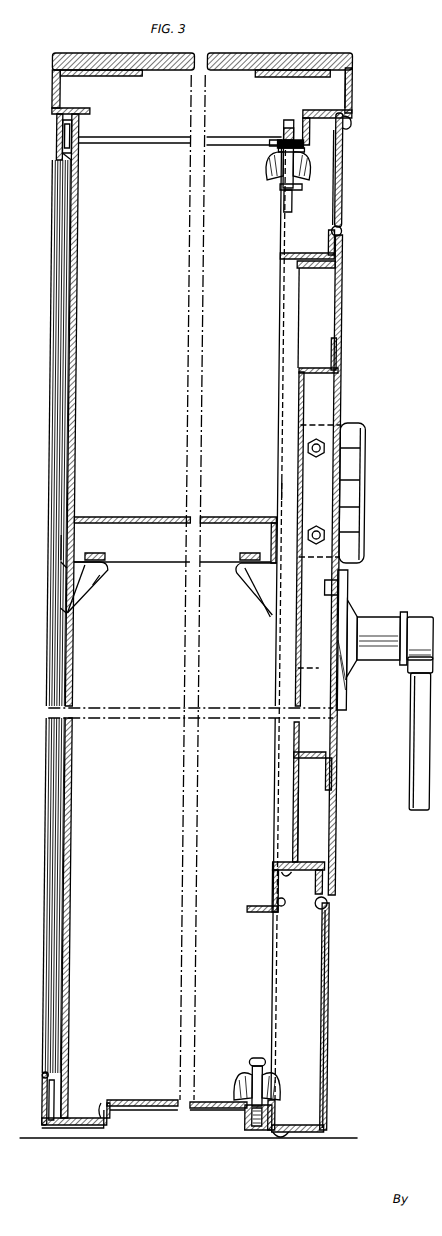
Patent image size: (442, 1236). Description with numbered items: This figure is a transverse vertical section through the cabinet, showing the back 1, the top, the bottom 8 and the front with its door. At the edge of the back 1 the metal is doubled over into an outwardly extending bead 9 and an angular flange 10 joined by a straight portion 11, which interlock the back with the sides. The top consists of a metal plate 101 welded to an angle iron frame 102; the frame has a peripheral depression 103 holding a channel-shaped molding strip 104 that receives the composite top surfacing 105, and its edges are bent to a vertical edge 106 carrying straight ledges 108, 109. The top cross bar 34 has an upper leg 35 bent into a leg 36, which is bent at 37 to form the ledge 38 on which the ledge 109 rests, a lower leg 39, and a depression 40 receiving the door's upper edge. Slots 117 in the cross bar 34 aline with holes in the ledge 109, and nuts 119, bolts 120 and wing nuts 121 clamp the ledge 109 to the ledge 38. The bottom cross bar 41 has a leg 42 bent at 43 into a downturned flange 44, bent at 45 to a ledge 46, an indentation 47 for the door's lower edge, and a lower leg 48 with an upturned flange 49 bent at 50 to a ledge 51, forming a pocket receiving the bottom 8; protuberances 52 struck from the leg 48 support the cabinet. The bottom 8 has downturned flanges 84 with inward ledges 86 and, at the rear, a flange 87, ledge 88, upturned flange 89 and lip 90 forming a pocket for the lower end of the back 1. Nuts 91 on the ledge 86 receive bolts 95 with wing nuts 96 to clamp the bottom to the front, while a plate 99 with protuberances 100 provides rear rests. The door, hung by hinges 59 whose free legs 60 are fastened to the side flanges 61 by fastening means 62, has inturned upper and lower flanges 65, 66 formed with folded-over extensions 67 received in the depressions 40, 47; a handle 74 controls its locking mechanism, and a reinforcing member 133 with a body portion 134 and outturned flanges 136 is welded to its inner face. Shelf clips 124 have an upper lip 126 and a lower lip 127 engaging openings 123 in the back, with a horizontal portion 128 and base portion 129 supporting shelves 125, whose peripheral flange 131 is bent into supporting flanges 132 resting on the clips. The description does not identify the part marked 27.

The back 1 is at (72, 786).
The bottom 8 is at (300, 56).
The bead 9 is at (57, 118).
The flange 10 is at (66, 150).
The straight portion 11 is at (63, 135).
The door inner panel 27 is at (333, 937).
The top cross bar 34 is at (344, 166).
The upper inwardly extending leg 35 is at (348, 122).
The leg 36 is at (310, 143).
The bend 37 is at (290, 135).
The inwardly extending ledge 38 is at (279, 150).
The lower inwardly extending leg 39 is at (284, 254).
The depression 40 is at (343, 215).
The bottom cross bar 41 is at (336, 954).
The inwardly extending leg 42 is at (281, 866).
The bend 43 is at (287, 862).
The downturned flange 44 is at (280, 882).
The bend 45 is at (284, 898).
The inwardly extending ledge 46 is at (255, 910).
The indentation 47 is at (336, 905).
The lower inwardly extending leg 48 is at (304, 1133).
The upturned flange 49 is at (282, 1100).
The bend 50 is at (274, 1095).
The inwardly extending ledge 51 is at (250, 1102).
The protuberances 52 is at (282, 1134).
The hinges 59 is at (368, 424).
The free legs 60 is at (330, 420).
The side door flanges 61 is at (300, 312).
The fastening means 62 is at (313, 528).
The upper flange 65 is at (300, 266).
The lower flange 66 is at (300, 845).
The folded-over extensions 67 is at (345, 232).
The handle 74 is at (417, 749).
The downwardly extending flanges 84 is at (286, 1122).
The inwardly extending legs 86 is at (262, 1132).
The downturned flange 87 is at (112, 1102).
The horizontal leg 88 is at (74, 1118).
The upturned flange 89 is at (53, 1075).
The lip 90 is at (72, 1078).
The nuts 91 is at (256, 1120).
The bolts 95 is at (260, 1062).
The wing nuts 96 is at (250, 1082).
The separate plate 99 is at (160, 1110).
The protuberances 100 is at (95, 1130).
The metal plate 101 is at (250, 68).
The angle iron frame 102 is at (100, 77).
The peripheral depression 103 is at (50, 70).
The molding strip 104 is at (355, 60).
The composite top surfacing 105 is at (104, 56).
The vertical edge 106 is at (352, 95).
The ledge 108 is at (340, 110).
The ledge 109 is at (280, 142).
The spaced slots 117 is at (276, 162).
The nuts 119 is at (296, 138).
The bolts 120 is at (304, 187).
The wing nuts 121 is at (282, 180).
The spaced openings 123 is at (62, 566).
The shelf clips 124 is at (104, 580).
The shelves 125 is at (140, 517).
The upwardly extending lip 126 is at (283, 495).
The lower lip 127 is at (246, 576).
The horizontal portion 128 is at (96, 592).
The base portion 129 is at (86, 604).
The peripheral flange 131 is at (212, 522).
The supporting flanges 132 is at (100, 555).
The reinforcing member 133 is at (302, 690).
The body portion 134 is at (300, 737).
The outturned flanges 136 is at (340, 350).